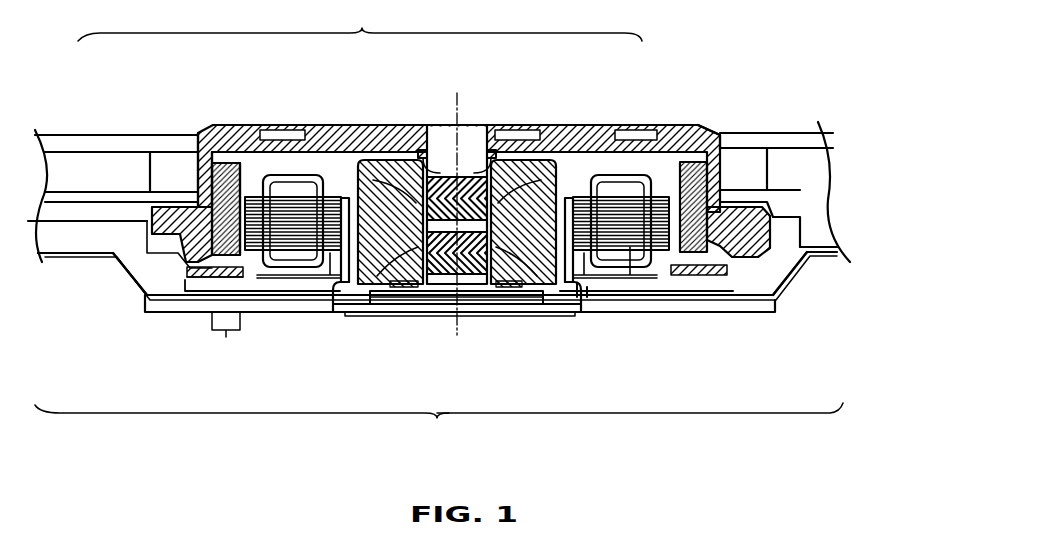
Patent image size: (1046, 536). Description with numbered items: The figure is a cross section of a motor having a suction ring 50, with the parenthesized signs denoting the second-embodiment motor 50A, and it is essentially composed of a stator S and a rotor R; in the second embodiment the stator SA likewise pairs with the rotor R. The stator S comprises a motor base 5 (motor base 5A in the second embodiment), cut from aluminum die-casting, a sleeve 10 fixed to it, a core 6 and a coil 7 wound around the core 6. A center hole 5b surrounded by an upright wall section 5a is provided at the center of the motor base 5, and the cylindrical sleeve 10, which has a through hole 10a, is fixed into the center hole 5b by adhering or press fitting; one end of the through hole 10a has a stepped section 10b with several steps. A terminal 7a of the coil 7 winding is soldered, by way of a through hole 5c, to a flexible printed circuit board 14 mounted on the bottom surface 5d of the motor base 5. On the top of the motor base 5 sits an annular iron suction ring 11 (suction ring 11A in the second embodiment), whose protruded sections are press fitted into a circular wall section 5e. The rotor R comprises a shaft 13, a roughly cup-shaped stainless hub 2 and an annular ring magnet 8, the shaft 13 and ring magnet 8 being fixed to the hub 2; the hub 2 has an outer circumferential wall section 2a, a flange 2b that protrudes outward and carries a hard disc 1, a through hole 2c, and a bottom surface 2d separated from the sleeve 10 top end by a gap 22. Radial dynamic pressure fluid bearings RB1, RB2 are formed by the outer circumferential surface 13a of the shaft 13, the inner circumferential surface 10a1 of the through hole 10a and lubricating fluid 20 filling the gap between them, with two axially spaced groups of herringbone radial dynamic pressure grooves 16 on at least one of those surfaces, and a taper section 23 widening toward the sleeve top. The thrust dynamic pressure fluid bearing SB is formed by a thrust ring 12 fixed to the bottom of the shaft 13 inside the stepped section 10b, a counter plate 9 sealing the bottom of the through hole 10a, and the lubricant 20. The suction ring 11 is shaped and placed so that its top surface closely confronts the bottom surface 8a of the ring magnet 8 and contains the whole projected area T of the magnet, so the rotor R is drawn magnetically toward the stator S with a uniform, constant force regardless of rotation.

The hard disc 1 is at (778, 197).
The hub 2 is at (333, 126).
The outer circumferential wall section 2a is at (200, 180).
The flange 2b is at (133, 235).
The through hole 2c is at (413, 140).
The bottom surface 2d is at (619, 126).
The motor base 5 is at (62, 237).
The motor base 5A is at (47, 318).
The wall section 5a is at (301, 250).
The center hole 5b is at (328, 262).
The through hole 5c is at (680, 312).
The bottom surface 5d is at (125, 255).
The wall section 5e is at (185, 278).
The core 6 is at (250, 262).
The coil 7 is at (278, 265).
The terminal 7a is at (670, 280).
The ring magnet 8 is at (216, 165).
The bottom surface 8a is at (227, 165).
The counter plate 9 is at (512, 288).
The sleeve 10 is at (360, 287).
The through hole 10a is at (585, 290).
The inner circumferential surface 10a1 is at (695, 337).
The stepped section 10b is at (542, 288).
The suction ring 11 is at (203, 282).
The suction ring 11A is at (191, 330).
The thrust ring 12 is at (398, 286).
The shaft 13 is at (437, 133).
The outer circumferential surface 13a is at (452, 130).
The flexible printed circuit board 14 is at (778, 262).
The radial dynamic pressure grooves 16 is at (562, 168).
The lubricating fluid 20 is at (488, 140).
The gap 22 is at (283, 135).
The taper section 23 is at (515, 147).
The motor having a suction ring 50 is at (679, 39).
The motor 50A is at (800, 39).
The rotor R is at (368, 20).
The stator S is at (394, 451).
The stator SA is at (427, 451).
The radial dynamic pressure fluid bearing RB1 is at (395, 190).
The radial dynamic pressure fluid bearing RB2 is at (378, 272).
The thrust dynamic pressure fluid bearing SB is at (478, 288).
The projected area T is at (226, 338).